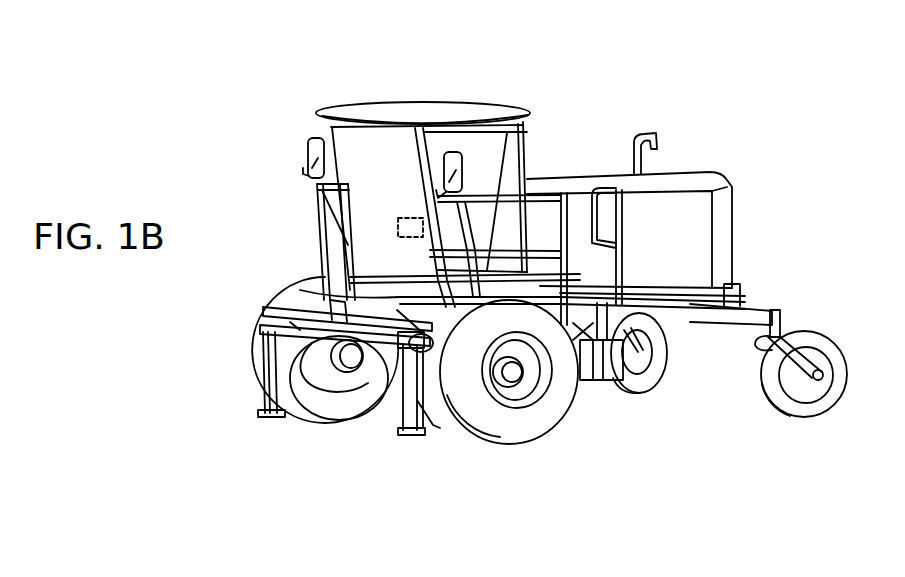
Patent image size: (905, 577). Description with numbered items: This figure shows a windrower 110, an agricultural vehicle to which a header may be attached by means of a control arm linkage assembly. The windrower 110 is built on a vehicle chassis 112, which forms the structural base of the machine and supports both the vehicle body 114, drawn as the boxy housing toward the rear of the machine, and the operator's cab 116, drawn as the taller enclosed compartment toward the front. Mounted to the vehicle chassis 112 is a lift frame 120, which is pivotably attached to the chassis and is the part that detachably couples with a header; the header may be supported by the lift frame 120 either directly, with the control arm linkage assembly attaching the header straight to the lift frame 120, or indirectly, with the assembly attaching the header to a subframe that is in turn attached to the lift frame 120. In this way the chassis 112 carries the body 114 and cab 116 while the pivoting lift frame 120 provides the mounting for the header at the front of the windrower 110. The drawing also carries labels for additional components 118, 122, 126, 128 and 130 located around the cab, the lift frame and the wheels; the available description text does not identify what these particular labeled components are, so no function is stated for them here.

The windrower 110 is at (702, 125).
The vehicle chassis 112 is at (692, 316).
The vehicle body 114 is at (573, 174).
The operator's cab 116 is at (440, 107).
The control panel 118 is at (398, 228).
The lift frame 120 is at (390, 408).
The mounting bracket 122 is at (433, 427).
The drive wheel 126 is at (433, 378).
The foot plate 128 is at (273, 416).
The platform frame 130 is at (326, 308).